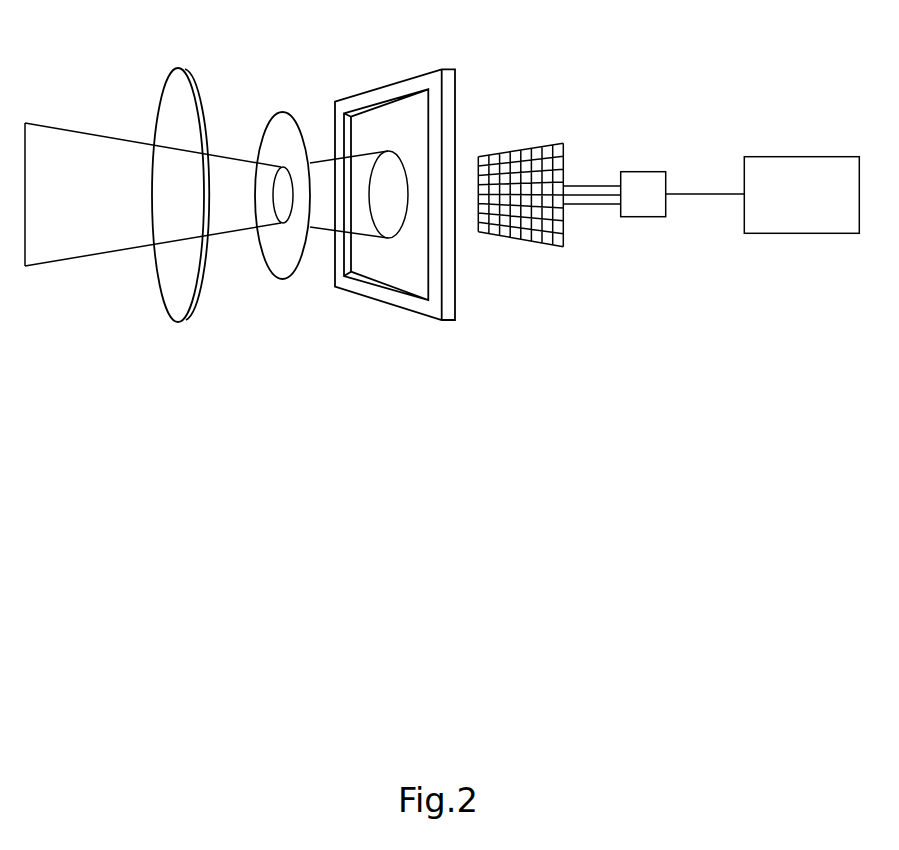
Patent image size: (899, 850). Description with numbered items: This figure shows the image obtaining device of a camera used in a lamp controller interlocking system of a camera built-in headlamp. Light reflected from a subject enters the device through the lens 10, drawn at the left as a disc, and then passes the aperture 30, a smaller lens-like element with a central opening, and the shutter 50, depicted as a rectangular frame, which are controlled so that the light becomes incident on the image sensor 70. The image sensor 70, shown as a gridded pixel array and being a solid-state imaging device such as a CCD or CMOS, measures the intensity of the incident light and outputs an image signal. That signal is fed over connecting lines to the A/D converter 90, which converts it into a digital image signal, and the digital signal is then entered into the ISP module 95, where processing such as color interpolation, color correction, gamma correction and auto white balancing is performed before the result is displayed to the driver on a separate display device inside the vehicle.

The lens 10 is at (181, 68).
The aperture 30 is at (282, 111).
The shutter 50 is at (387, 85).
The image sensor 70 is at (515, 150).
The A/D converter 90 is at (643, 171).
The Image Signal Processing module 95 is at (802, 156).